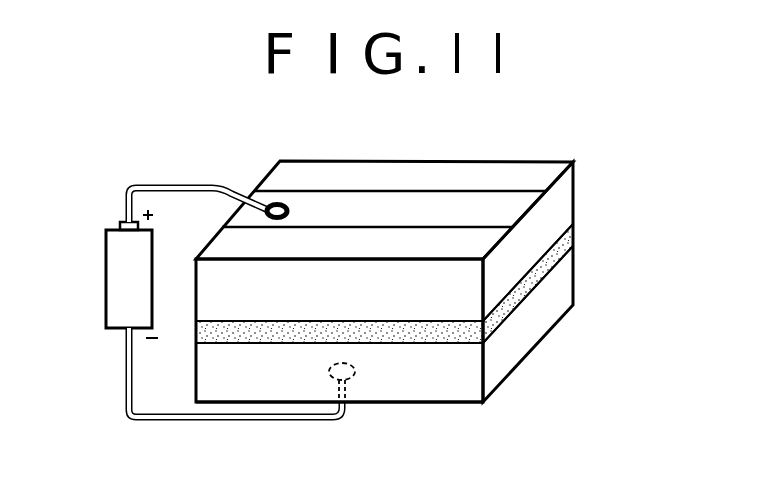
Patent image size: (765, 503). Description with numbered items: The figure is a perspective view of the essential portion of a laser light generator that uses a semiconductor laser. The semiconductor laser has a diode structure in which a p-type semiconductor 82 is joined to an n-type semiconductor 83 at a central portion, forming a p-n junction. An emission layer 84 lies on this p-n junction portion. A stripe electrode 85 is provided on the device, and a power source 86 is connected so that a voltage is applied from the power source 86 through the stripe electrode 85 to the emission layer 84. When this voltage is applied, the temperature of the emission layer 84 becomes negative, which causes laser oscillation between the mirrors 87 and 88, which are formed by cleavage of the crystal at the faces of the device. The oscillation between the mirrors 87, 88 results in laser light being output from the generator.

The p-type semiconductor 82 is at (472, 293).
The n-type semiconductor 83 is at (391, 402).
The emission layer 84 is at (437, 335).
The stripe electrode 85 is at (436, 207).
The power source 86 is at (114, 266).
The mirror 87 is at (553, 240).
The mirror 88 is at (550, 270).